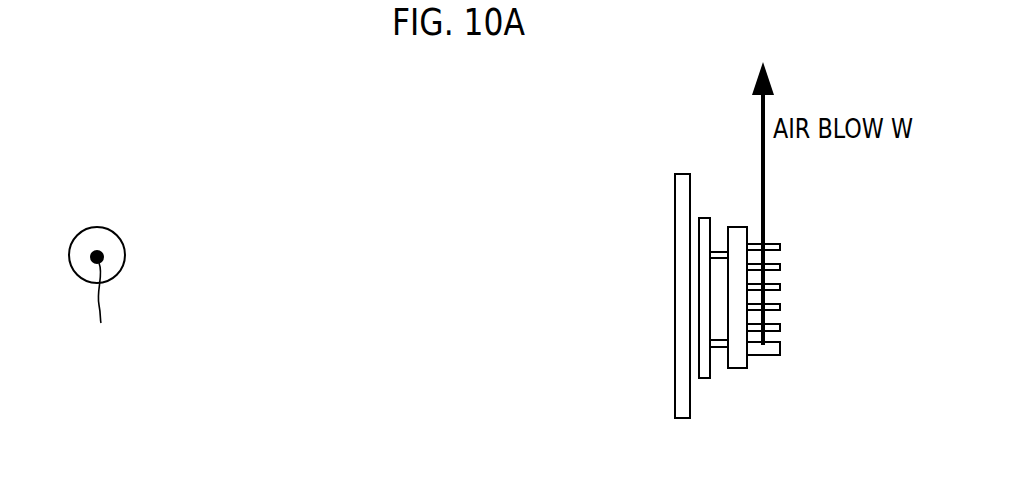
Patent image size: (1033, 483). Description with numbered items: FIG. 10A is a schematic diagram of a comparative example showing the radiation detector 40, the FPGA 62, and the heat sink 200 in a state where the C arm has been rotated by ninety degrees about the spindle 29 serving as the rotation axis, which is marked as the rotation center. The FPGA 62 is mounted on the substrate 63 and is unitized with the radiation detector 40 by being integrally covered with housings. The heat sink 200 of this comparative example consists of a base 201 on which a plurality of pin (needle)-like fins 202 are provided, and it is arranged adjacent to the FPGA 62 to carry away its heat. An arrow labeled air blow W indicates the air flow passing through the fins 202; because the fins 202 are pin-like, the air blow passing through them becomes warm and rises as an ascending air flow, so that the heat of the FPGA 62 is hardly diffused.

The spindle 29 is at (126, 255).
The radiation detector 40 is at (682, 176).
The substrate 63 is at (704, 218).
The FPGA 62 is at (718, 258).
The heat sink 200 is at (793, 326).
The base 201 is at (739, 372).
The fins 202 is at (771, 248).